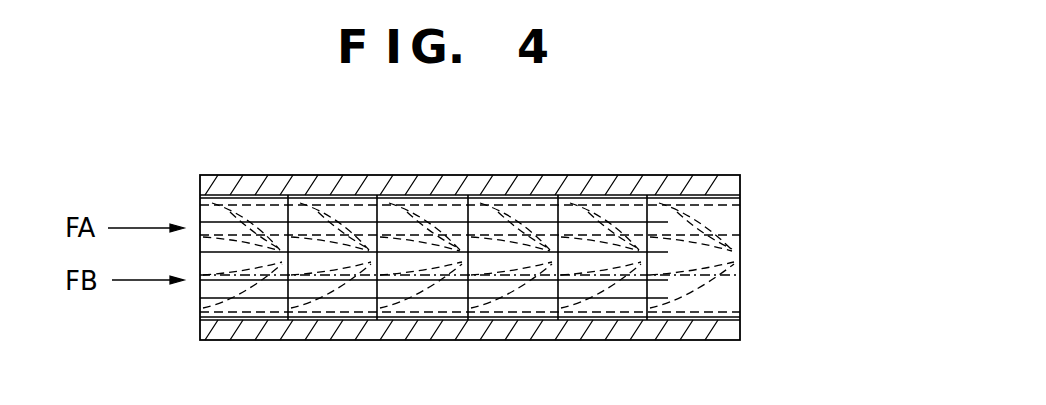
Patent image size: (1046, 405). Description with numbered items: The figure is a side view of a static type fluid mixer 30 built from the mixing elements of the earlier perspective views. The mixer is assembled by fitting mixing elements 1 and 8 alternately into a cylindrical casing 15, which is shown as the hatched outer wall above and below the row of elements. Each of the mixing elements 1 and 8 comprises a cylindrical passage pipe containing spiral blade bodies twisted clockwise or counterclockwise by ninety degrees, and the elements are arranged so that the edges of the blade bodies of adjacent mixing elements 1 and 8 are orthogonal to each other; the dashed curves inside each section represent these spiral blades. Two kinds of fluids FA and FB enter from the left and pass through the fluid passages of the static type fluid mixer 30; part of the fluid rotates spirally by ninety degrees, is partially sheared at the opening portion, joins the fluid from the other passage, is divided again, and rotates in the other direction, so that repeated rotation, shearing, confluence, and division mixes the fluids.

The mixing element 1 is at (268, 288).
The mixing element 8 is at (335, 332).
The cylindrical casing 15 is at (630, 183).
The static type fluid mixer 30 is at (757, 244).